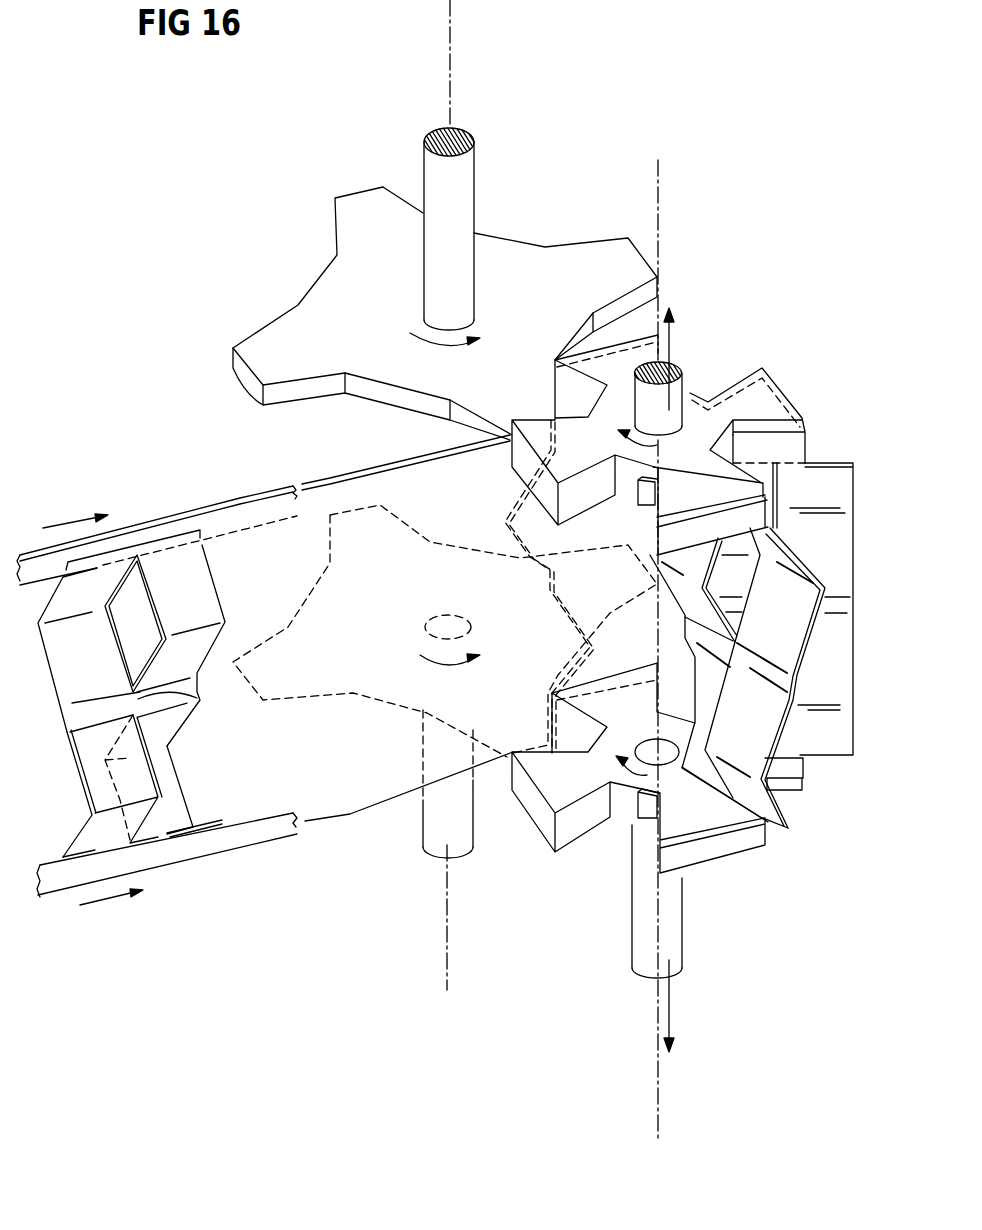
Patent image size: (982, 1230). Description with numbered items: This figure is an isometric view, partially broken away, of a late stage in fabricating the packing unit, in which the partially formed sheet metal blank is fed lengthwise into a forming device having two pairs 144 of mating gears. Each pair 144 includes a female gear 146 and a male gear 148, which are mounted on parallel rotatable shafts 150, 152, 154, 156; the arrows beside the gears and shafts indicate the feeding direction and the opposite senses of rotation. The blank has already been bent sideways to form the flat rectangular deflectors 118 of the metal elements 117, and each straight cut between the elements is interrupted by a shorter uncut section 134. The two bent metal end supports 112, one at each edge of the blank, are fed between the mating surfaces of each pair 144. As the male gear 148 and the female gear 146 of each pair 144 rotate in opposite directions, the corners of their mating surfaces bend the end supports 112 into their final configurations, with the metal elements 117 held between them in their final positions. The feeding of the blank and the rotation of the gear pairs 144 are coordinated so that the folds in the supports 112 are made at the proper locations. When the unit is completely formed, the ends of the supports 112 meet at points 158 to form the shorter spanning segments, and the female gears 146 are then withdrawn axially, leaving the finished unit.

The end support 112 is at (257, 506).
The metal element 117 is at (138, 543).
The deflector 118 is at (97, 607).
The uncut section 134 is at (197, 698).
The pair of mating gears 144 is at (626, 69).
The female gear 146 is at (742, 376).
The male gear 148 is at (566, 248).
The rotatable shaft 150 is at (675, 368).
The rotatable shaft 152 is at (474, 166).
The rotatable shaft 154 is at (676, 926).
The rotatable shaft 156 is at (463, 849).
The meeting point 158 is at (636, 500).